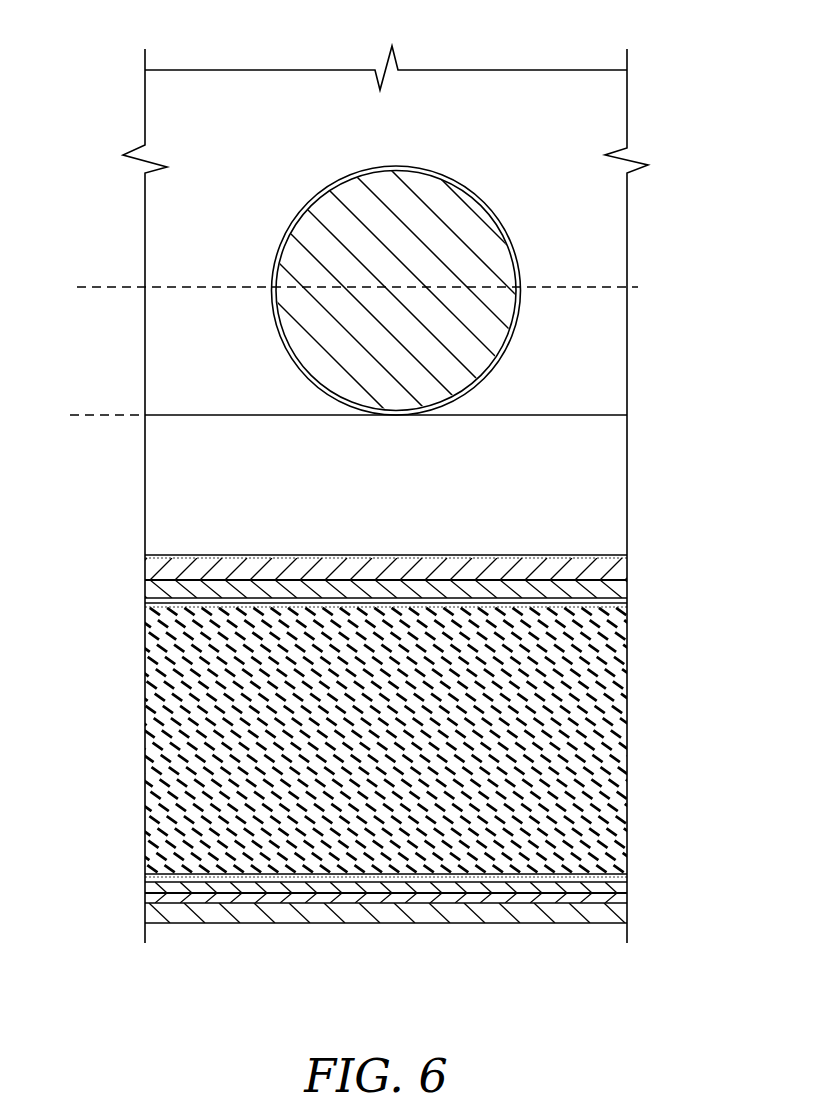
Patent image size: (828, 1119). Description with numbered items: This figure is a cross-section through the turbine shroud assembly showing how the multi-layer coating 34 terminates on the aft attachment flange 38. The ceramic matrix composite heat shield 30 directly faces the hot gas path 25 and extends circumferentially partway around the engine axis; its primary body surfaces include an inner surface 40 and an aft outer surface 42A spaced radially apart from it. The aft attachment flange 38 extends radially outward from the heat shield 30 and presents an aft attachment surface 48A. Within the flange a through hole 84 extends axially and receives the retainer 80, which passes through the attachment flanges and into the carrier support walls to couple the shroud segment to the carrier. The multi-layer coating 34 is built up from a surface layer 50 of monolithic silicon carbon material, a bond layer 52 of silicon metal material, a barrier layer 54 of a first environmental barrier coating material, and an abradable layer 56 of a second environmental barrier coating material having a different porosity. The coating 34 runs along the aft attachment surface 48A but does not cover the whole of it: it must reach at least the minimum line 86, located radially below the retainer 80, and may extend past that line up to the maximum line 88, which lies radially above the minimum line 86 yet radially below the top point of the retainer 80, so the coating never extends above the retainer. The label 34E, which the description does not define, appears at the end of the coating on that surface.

The gas path 25 is at (369, 973).
The heat shield 30 is at (594, 809).
The multi-layer coating 34 is at (191, 534).
The ply edge 34E is at (188, 414).
The aft attachment flange 38 is at (141, 111).
The inner surface 40 is at (549, 876).
The aft outer surface 42A is at (569, 606).
The aft attachment surface 48A is at (568, 357).
The surface layer 50 is at (353, 872).
The bond layer 52 is at (440, 872).
The barrier layer 54 is at (529, 885).
The abradable layer 56 is at (582, 539).
The retainer 80 is at (477, 224).
The through hole 84 is at (524, 323).
The minimum line 86 is at (104, 414).
The maximum line 88 is at (112, 286).